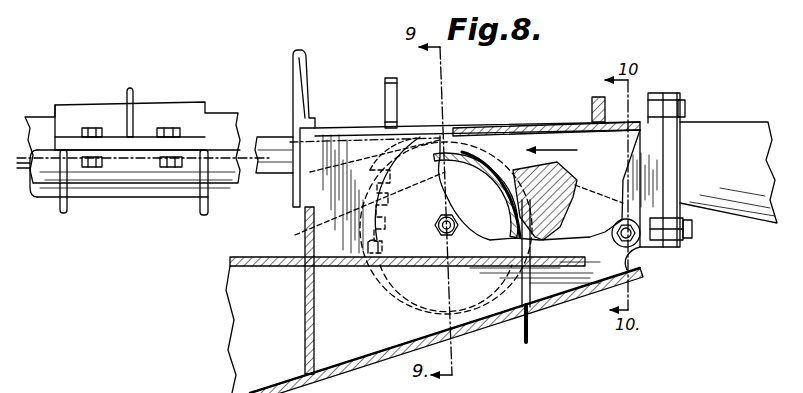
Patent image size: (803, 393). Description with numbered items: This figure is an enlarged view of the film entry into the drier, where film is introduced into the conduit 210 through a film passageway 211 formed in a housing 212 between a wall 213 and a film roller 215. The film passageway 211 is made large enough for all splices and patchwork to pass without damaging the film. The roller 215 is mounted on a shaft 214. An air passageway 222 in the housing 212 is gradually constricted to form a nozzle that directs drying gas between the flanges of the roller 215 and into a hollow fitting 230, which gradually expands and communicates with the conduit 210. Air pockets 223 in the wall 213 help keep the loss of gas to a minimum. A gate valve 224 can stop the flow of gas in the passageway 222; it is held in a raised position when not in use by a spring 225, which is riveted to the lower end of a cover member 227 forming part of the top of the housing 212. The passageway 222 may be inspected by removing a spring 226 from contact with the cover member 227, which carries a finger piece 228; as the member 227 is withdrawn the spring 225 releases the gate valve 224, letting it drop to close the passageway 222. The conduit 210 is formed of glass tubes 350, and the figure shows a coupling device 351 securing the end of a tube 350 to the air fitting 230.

The conduit 210 is at (40, 117).
The coupling device 351 is at (162, 108).
The tube 350 is at (45, 185).
The hollow fitting 230 is at (277, 175).
The spring 226 is at (305, 80).
The cover member 227 is at (327, 128).
The finger piece 228 is at (396, 95).
The air passageway 222 is at (535, 128).
The spring 225 is at (582, 125).
The gate valve 224 is at (633, 123).
The film roller 215 is at (463, 173).
The air pocket 223 is at (516, 170).
The wall 213 is at (567, 206).
The housing 212 is at (580, 228).
The film passageway 211 is at (525, 243).
The shaft 214 is at (443, 236).